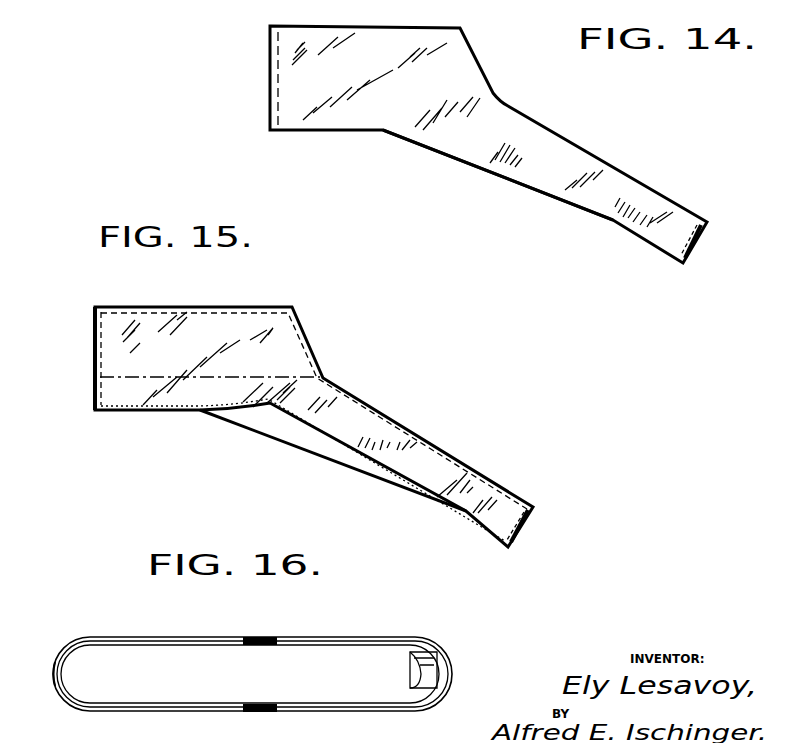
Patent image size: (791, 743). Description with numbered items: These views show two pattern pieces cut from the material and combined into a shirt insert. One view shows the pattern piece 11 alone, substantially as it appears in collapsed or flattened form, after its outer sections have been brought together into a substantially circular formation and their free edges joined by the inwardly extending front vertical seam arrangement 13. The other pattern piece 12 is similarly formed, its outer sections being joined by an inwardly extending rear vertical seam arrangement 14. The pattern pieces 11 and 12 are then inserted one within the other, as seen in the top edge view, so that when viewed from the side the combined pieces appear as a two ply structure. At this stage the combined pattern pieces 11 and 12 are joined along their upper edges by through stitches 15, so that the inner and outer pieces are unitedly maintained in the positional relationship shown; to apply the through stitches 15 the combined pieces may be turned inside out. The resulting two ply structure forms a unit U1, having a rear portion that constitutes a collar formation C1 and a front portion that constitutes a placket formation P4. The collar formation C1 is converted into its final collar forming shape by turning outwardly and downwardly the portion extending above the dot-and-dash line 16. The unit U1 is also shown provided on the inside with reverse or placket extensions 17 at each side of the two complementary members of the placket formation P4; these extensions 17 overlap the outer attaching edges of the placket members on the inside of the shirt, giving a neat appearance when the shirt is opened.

In FIG. 14, the pattern piece 11 is at (513, 213).
In FIG. 16, the pattern piece 11 is at (230, 703).
In FIG. 15, the pattern piece 12 is at (493, 521).
In FIG. 16, the pattern piece 12 is at (185, 637).
In FIG. 14, the front vertical seam arrangement 13 is at (690, 216).
In FIG. 16, the front vertical seam arrangement 13 is at (417, 683).
In FIG. 16, the rear vertical seam arrangement 14 is at (52, 672).
In FIG. 15, the through stitches 15 is at (196, 313).
In FIG. 15, the dot-and-dash line 16 is at (270, 377).
In FIG. 14, the placket extensions 17 is at (478, 160).
In FIG. 15, the placket extensions 17 is at (300, 440).
In FIG. 15, the collar formation C1 is at (72, 307).
In FIG. 15, the unit U1 is at (520, 425).
In FIG. 16, the unit U1 is at (302, 625).
In FIG. 15, the placket formation P4 is at (390, 407).